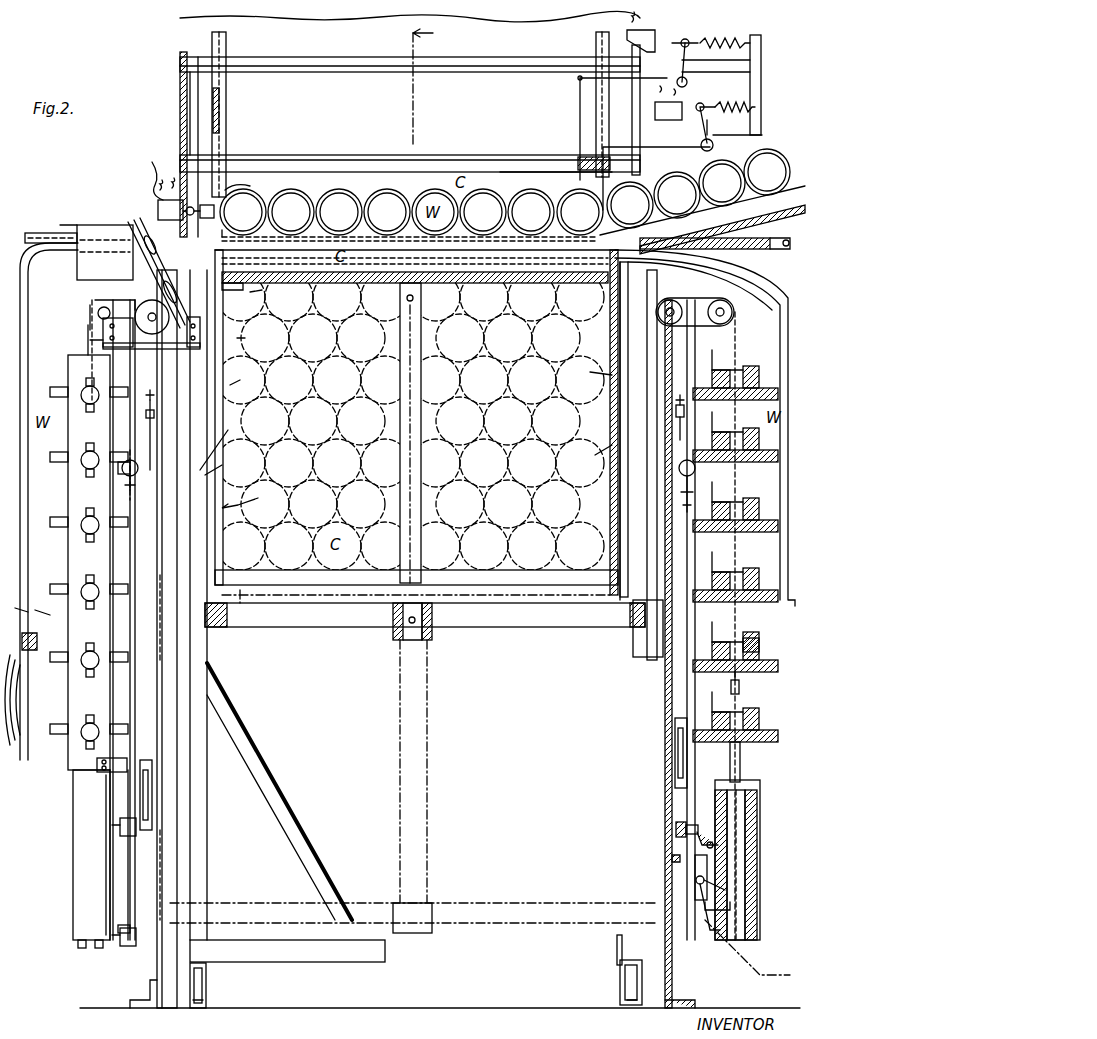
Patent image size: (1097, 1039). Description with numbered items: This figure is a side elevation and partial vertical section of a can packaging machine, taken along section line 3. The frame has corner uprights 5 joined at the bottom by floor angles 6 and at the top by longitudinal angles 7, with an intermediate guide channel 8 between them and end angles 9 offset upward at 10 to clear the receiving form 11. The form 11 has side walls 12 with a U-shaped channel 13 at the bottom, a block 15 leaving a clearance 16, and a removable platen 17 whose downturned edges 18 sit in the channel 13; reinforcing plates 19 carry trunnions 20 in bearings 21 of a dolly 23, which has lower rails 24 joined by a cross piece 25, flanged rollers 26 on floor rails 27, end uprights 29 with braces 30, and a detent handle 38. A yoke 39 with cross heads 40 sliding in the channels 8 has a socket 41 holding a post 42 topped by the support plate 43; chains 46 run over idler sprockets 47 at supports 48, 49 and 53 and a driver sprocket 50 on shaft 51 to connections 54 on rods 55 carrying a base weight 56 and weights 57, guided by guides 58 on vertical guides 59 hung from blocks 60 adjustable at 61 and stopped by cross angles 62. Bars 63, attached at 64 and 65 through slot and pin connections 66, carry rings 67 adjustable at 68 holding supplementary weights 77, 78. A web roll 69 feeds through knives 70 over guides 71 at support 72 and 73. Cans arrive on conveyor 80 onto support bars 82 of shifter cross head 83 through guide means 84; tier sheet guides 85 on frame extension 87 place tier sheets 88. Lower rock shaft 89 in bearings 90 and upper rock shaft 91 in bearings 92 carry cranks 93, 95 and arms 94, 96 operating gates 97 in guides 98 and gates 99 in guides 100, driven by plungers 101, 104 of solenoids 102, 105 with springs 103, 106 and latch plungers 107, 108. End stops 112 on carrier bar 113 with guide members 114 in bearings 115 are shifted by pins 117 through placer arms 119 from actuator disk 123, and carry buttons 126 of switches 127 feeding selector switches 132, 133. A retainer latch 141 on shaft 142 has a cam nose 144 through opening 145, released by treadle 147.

The section line 3 is at (431, 85).
The corner uprights 5 is at (177, 838).
The longitudinal floor angles 6 is at (140, 990).
The longitudinal angles 7 is at (670, 282).
The intermediate upright guide channel 8 is at (665, 795).
The traversing or end angles 9 is at (250, 310).
The upward offset 10 is at (600, 298).
The can complement receiving form 11 is at (520, 600).
The side walls 12 is at (612, 352).
The ledge or U-shaped channel 13 is at (232, 620).
The block 15 is at (212, 365).
The clearance 16 is at (600, 490).
The removable platen 17 is at (470, 288).
The downwardly turned edges 18 is at (530, 300).
The reinforcing plates 19 is at (612, 330).
The trunnions 20 is at (592, 454).
The bearings 21 is at (580, 405).
The removable dolly 23 is at (282, 730).
The lower horizontal rails 24 is at (617, 945).
The cross piece 25 is at (300, 962).
The flanged rollers 26 is at (206, 985).
The floor rails 27 is at (200, 1008).
The end uprights 29 is at (207, 855).
The brace 30 is at (272, 772).
The handle 38 is at (589, 369).
The platen supporting yoke 39 is at (365, 620).
The cross head 40 is at (192, 659).
The center socket 41 is at (398, 640).
The center support post 42 is at (430, 430).
The platen support plate 43 is at (480, 322).
The chain 46 is at (88, 340).
The idler sprocket 47 is at (676, 322).
The sprocket support 48 is at (705, 330).
The idler sprocket 49 is at (732, 313).
The driver sprocket 50 is at (150, 340).
The longitudinal shaft 51 is at (150, 350).
The idler sprocket 53 is at (98, 316).
The adjustable chain connection 54 is at (742, 688).
The base weight support rod 55 is at (742, 750).
The base weight 56 is at (760, 888).
The removably mounted weights 57 is at (73, 792).
The guides 58 is at (140, 828).
The vertical guides 59 is at (123, 693).
The block 60 is at (120, 470).
The adjustable mounting 61 is at (142, 418).
The cross angle 62 is at (128, 945).
The upright bars 63 is at (70, 770).
The bar attachment 64 is at (118, 472).
The bracket securing 65 is at (95, 810).
The slot and pin connections 66 is at (152, 770).
The weight supporting rings 67 is at (62, 660).
The ring adjustable support 68 is at (92, 655).
The paper web roll supply 69 is at (28, 735).
The wrapper severing knives 70 is at (36, 604).
The horizontal guide 71 is at (70, 263).
The guide support 72 is at (128, 263).
The horizontal guide 73 is at (745, 275).
The supplementary weight 77 is at (760, 380).
The supplementary weight 78 is at (742, 368).
The conveyor means 80 is at (795, 230).
The support bars 82 is at (339, 212).
The shifter cross head 83 is at (790, 262).
The guide means 84 is at (748, 226).
The tier sheet guides 85 is at (212, 45).
The upper frame extension 87 is at (180, 129).
The tier sheets 88 is at (215, 22).
The lower rock shaft 89 is at (722, 183).
The bearings 90 is at (767, 172).
The upper rock shaft 91 is at (775, 72).
The bearings 92 is at (775, 52).
The crank 93 is at (718, 96).
The horizontally projecting arms 94 is at (630, 205).
The crank 95 is at (690, 36).
The horizontally projecting arms 96 is at (580, 82).
The upright gates 97 is at (580, 212).
The guides 98 is at (603, 147).
The upright gates 99 is at (580, 105).
The guides 100 is at (565, 176).
The plunger 101 is at (677, 195).
The solenoid 102 is at (655, 112).
The retractile spring 103 is at (775, 95).
The plunger 104 is at (650, 30).
The solenoid 105 is at (596, 36).
The retractile spring 106 is at (775, 32).
The latch plunger 107 is at (775, 118).
The latch plunger 108 is at (728, 38).
The can row end stops 112 is at (240, 192).
The carrier bar 113 is at (158, 205).
The guide members 114 is at (25, 233).
The supporting bearings 115 is at (60, 225).
The pin 117 is at (130, 222).
The end stop placer arm 119 is at (120, 292).
The actuator disk 123 is at (125, 345).
The actuator button 126 is at (200, 200).
The normally open switch 127 is at (147, 174).
The solenoid selector switch 132 is at (66, 351).
The solenoid selector switch 133 is at (259, 340).
The yoke retainer latch 141 is at (707, 872).
The shaft 142 is at (730, 905).
The cam nose portion 144 is at (672, 858).
The opening 145 is at (668, 843).
The treadle 147 is at (748, 960).